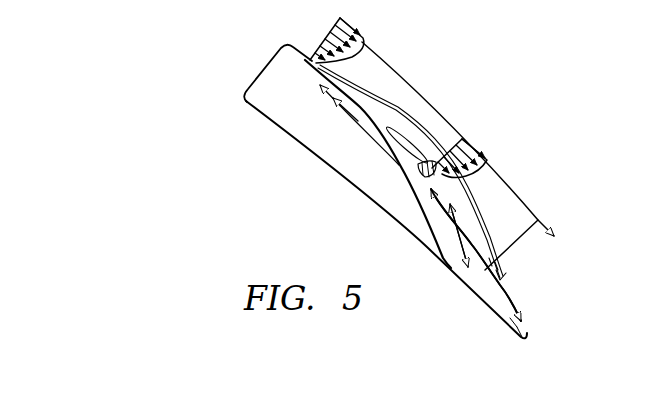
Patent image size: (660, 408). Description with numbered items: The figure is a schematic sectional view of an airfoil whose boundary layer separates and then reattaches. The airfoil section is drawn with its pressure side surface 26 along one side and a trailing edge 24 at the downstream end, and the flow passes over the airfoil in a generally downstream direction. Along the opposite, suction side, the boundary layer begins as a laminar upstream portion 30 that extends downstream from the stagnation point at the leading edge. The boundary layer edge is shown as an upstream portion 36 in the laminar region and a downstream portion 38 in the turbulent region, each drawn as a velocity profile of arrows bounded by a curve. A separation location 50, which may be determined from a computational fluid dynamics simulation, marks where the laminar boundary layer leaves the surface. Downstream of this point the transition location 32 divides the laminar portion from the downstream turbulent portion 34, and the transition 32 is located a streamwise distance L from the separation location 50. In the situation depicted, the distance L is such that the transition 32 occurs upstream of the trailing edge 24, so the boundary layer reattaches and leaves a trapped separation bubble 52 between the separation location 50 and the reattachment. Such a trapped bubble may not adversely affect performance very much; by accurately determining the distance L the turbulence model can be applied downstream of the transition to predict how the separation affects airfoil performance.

The trailing edge 24 is at (535, 338).
The pressure side surface 26 is at (318, 158).
The laminar upstream portion 30 is at (390, 94).
The transition location 32 is at (520, 240).
The downstream turbulent portion 34 is at (562, 310).
The upstream portion of boundary layer edge 36 is at (413, 95).
The downstream portion of boundary layer edge 38 is at (551, 231).
The separation location 50 is at (318, 88).
The trapped separation bubble 52 is at (452, 208).
The streamwise distance L is at (353, 121).